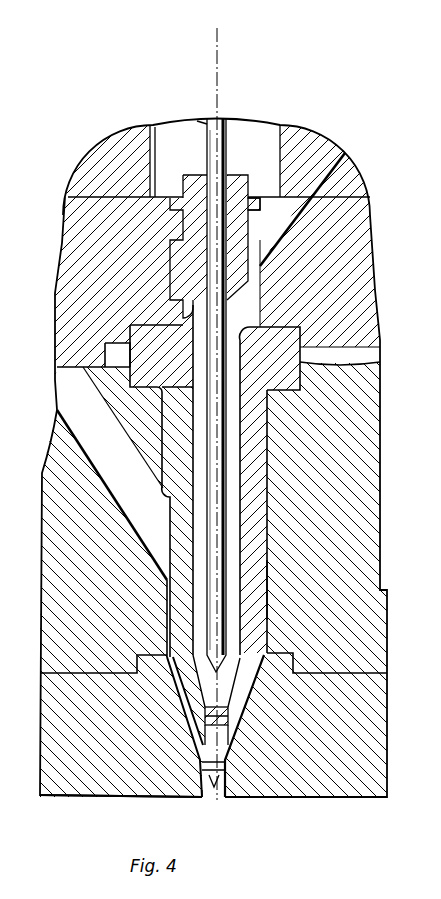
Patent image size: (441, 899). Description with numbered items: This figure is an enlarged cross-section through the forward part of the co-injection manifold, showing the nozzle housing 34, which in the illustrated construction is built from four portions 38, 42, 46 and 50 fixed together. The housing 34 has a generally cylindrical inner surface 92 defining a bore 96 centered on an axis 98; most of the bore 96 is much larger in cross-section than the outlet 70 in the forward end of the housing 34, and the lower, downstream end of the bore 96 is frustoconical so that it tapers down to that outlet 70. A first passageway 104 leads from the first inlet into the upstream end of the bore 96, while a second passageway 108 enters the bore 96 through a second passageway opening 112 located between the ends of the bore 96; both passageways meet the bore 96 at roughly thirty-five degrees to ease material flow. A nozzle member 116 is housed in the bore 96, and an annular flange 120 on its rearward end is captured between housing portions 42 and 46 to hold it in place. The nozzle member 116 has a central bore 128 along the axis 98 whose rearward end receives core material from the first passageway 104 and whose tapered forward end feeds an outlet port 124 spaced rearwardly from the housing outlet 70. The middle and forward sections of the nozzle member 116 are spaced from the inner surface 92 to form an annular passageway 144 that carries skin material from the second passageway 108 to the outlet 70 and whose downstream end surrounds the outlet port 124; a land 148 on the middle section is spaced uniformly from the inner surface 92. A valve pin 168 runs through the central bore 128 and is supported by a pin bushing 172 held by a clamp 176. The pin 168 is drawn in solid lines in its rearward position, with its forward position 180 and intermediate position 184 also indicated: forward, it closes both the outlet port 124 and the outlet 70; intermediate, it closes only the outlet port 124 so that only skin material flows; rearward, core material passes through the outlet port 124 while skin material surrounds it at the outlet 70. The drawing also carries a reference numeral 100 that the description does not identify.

The nozzle housing 34 is at (67, 798).
The housing portion 38 is at (113, 147).
The housing portion 42 is at (363, 253).
The housing portion 46 is at (385, 517).
The housing portion 50 is at (373, 713).
The outlet 70 is at (225, 803).
The inner surface 92 is at (262, 561).
The bore 96 is at (262, 426).
The axis 98 is at (218, 50).
The melt channel 100 is at (160, 527).
The first passageway 104 is at (347, 177).
The second passageway 108 is at (63, 380).
The second passageway opening 112 is at (157, 563).
The nozzle member 116 is at (255, 470).
The annular flange 120 is at (305, 360).
The outlet port 124 is at (218, 717).
The central bore 128 is at (238, 607).
The annular passageway 144 is at (267, 637).
The land 148 is at (157, 597).
The valve pin 168 is at (206, 122).
The pin bushing 172 is at (243, 257).
The clamp 176 is at (250, 198).
The forward position 180 is at (187, 805).
The intermediate position 184 is at (200, 745).